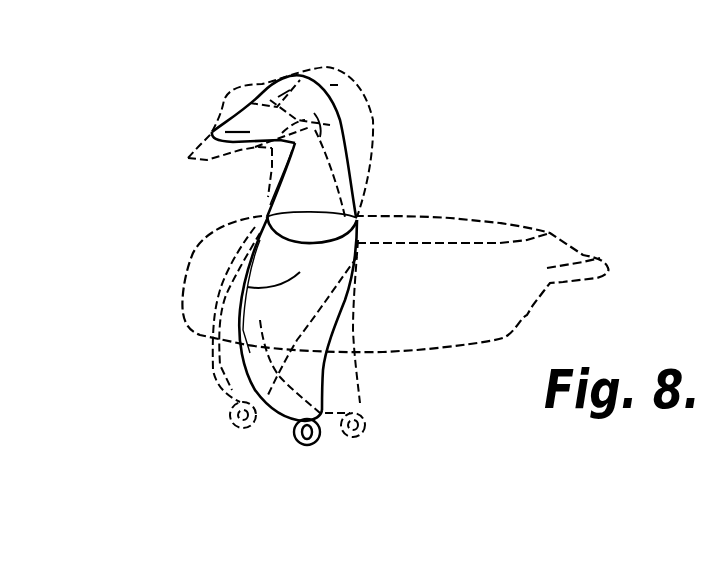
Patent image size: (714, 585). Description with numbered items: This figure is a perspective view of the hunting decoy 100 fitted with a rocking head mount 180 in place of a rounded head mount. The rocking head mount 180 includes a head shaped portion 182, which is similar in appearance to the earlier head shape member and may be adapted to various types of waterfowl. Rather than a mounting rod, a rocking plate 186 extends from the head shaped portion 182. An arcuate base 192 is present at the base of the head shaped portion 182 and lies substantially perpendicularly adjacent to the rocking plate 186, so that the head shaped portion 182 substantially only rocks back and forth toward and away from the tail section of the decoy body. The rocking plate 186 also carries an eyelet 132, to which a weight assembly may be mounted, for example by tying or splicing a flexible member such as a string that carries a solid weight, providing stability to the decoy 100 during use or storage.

The hunting decoy 100 is at (498, 180).
The eyelet 132 is at (300, 444).
The rocking head mount 180 is at (205, 115).
The head shaped portion 182 is at (303, 76).
The rocking plate 186 is at (303, 295).
The arcuate base 192 is at (316, 245).